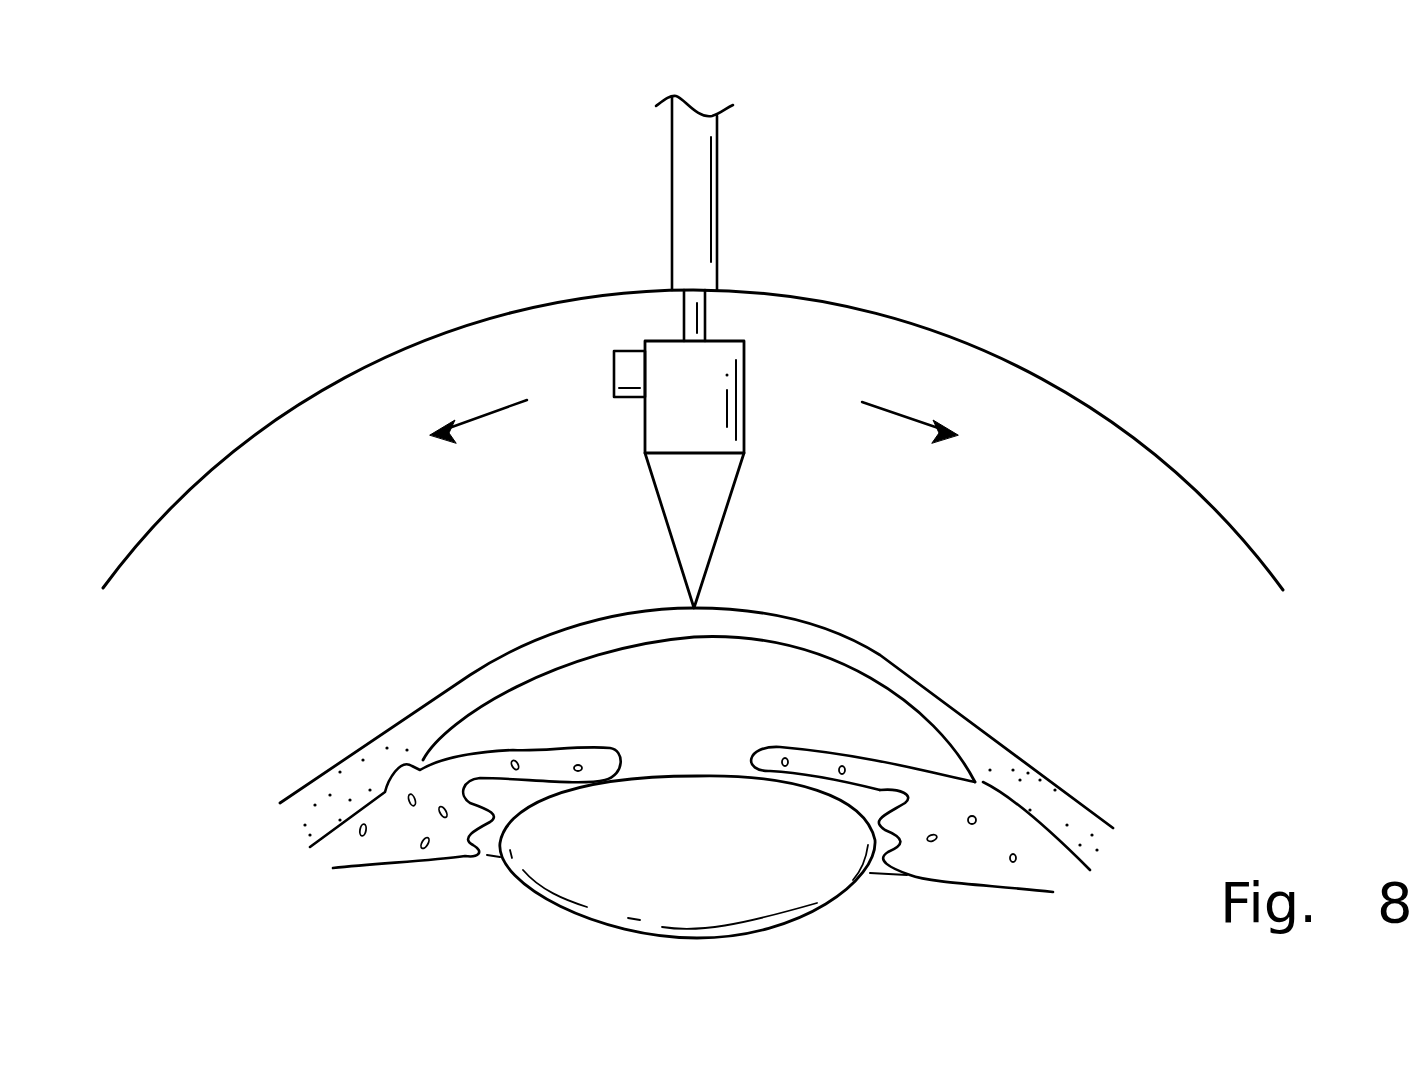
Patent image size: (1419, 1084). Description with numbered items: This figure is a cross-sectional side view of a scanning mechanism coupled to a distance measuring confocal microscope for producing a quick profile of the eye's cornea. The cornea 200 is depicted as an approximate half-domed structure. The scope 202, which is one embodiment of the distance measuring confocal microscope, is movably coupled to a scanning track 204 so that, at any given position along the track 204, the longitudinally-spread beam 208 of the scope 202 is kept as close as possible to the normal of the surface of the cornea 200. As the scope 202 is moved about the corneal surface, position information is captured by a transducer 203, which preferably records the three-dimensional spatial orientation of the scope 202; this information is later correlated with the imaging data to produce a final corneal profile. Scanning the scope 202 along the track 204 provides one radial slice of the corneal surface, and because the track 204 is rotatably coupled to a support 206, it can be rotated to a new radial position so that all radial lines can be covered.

The cornea 200 is at (900, 662).
The scope 202 is at (745, 378).
The transducer 203 is at (630, 351).
The scanning track 204 is at (1178, 473).
The support 206 is at (717, 173).
The longitudinally-spread beam 208 is at (727, 515).